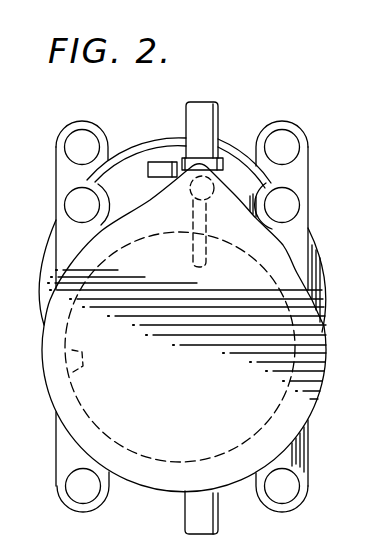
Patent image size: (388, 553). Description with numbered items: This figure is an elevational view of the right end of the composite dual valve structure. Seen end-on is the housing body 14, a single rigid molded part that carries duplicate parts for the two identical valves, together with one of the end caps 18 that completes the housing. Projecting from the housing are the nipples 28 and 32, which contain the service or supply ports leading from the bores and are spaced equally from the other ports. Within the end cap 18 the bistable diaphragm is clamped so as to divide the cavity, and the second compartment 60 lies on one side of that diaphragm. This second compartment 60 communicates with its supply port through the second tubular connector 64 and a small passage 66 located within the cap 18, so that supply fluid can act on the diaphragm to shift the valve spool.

The housing body 14 is at (303, 244).
The end cap 18 is at (278, 303).
The nipple 28 is at (193, 114).
The nipple 32 is at (155, 178).
The second compartment 60 is at (62, 384).
The second tubular connector 64 is at (190, 200).
The small passage 66 is at (190, 246).